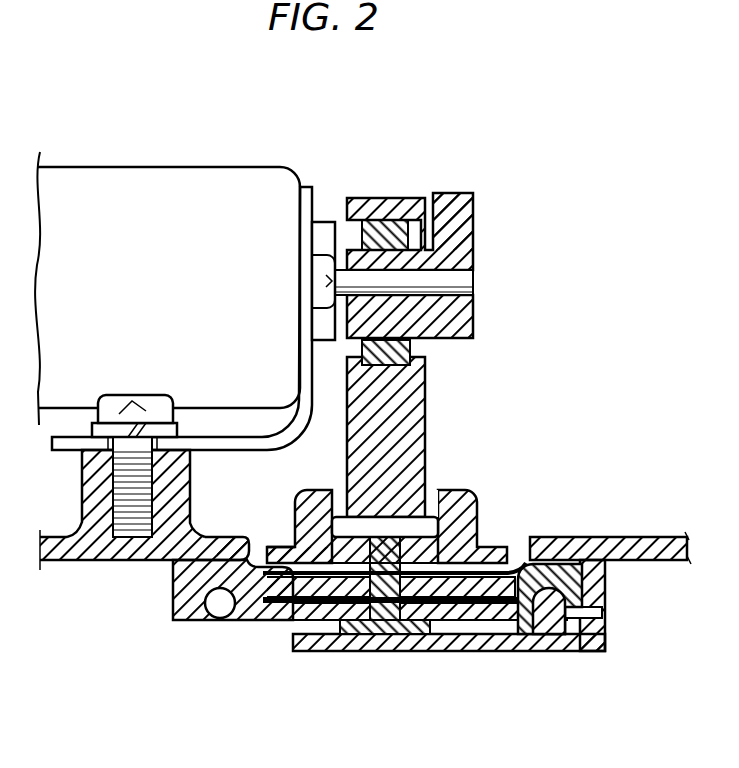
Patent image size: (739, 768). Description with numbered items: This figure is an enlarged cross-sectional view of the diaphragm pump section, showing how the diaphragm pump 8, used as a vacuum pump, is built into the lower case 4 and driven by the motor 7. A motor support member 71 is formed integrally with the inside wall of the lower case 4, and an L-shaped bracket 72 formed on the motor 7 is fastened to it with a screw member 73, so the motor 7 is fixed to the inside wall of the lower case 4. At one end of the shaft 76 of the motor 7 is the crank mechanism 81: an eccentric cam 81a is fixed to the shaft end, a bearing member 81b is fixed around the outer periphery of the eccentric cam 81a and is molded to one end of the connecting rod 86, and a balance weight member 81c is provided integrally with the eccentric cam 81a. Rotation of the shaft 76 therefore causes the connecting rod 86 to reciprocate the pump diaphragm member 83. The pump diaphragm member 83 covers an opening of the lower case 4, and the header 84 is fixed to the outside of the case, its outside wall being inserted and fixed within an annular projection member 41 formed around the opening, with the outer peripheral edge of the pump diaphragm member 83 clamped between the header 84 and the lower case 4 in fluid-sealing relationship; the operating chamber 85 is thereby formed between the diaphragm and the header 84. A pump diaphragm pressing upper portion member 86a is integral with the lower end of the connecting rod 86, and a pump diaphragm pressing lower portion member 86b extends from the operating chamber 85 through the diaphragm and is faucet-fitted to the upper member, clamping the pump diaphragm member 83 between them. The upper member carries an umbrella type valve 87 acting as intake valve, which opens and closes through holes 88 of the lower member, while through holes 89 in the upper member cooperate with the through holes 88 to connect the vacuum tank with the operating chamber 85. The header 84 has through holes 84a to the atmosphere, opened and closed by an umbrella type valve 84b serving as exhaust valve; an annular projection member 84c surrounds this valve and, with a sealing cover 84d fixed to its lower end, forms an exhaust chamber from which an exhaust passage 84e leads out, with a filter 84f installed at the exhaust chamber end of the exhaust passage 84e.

The motor 7 is at (177, 178).
The L-shaped bracket 72 is at (216, 445).
The screw member 73 is at (108, 396).
The motor support member 71 is at (84, 494).
The lower case 4 is at (90, 552).
The annular projection member 41 is at (173, 573).
The header 84 is at (242, 606).
The through holes 84a is at (410, 622).
The umbrella type valve 84b is at (362, 634).
The annular projection member 84c is at (600, 645).
The sealing cover 84d is at (338, 641).
The exhaust passage 84e is at (598, 617).
The filter 84f is at (557, 630).
The operating chamber 85 is at (520, 590).
The connecting rod 86 is at (422, 444).
The pump diaphragm pressing upper portion member 86a is at (278, 548).
The pump diaphragm pressing lower portion member 86b is at (280, 604).
The umbrella type valve 87 is at (385, 528).
The through holes 88 is at (478, 506).
The through holes 89 is at (428, 493).
The pump diaphragm member 83 is at (522, 566).
The crank mechanism 81 is at (489, 278).
The eccentric cam 81a is at (466, 326).
The bearing member 81b is at (410, 350).
The balance weight member 81c is at (466, 223).
The shaft 76 is at (472, 288).
The diaphragm pump 8 is at (445, 407).